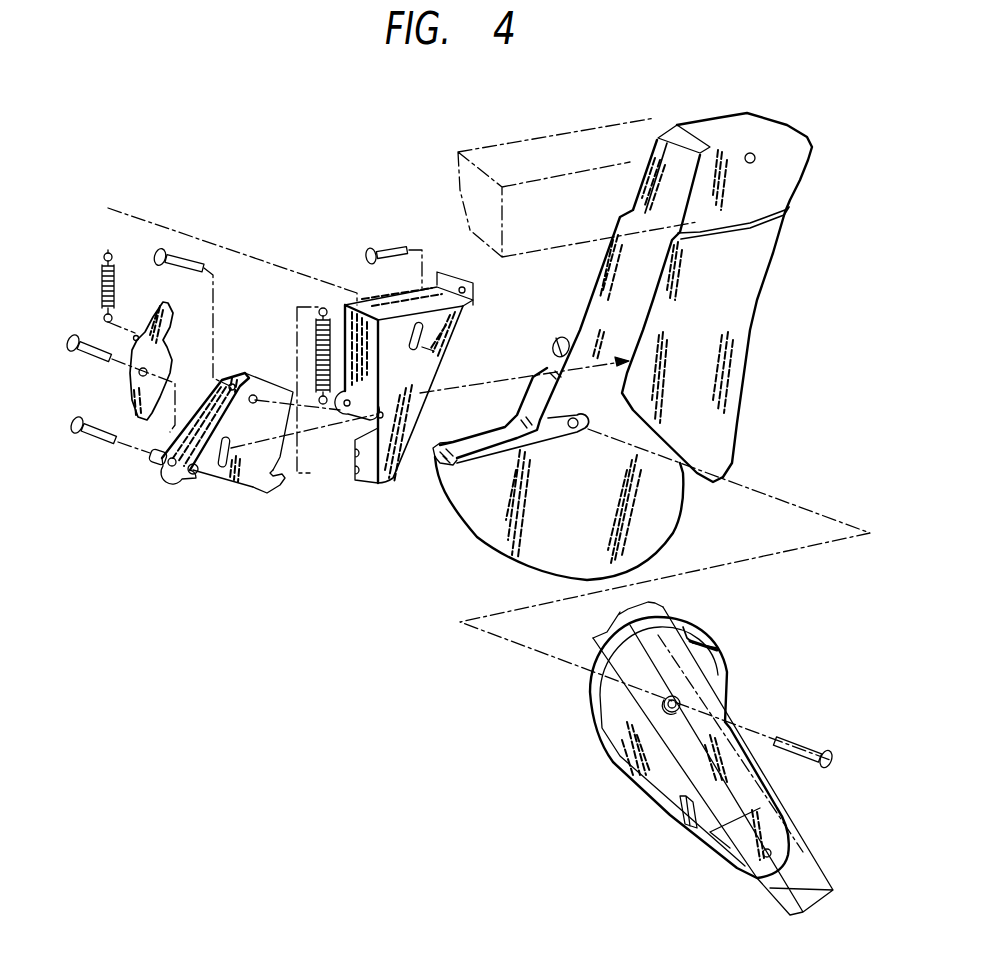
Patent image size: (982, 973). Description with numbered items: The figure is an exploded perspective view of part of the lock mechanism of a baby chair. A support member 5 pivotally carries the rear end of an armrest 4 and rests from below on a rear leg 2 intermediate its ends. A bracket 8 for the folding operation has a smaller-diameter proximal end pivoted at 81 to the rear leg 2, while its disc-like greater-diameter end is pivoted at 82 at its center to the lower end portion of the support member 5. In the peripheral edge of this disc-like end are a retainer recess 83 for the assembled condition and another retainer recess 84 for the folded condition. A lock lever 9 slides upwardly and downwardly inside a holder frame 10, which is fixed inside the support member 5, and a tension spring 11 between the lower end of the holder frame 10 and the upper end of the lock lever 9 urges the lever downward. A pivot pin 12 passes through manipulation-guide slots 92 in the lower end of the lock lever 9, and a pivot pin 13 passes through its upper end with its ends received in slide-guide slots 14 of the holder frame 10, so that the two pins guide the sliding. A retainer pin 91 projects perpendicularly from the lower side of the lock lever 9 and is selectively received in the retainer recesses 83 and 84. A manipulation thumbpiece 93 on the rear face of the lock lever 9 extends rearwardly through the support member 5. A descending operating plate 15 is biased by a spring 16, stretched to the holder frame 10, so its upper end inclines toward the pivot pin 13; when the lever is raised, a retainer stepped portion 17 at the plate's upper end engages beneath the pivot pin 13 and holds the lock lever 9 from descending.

The rear leg 2 is at (780, 884).
The armrest 4 is at (553, 140).
The support member 5 is at (750, 258).
The bracket 8 is at (603, 710).
The lock lever 9 is at (252, 489).
The holder frame 10 is at (416, 391).
The tension spring 11 is at (297, 336).
The pivot pin 12 is at (84, 360).
The pivot pin 13 is at (180, 252).
The slide-guide slot 14 is at (423, 332).
The descending operating plate 15 is at (130, 398).
The spring 16 is at (100, 283).
The retainer stepped portion 17 is at (166, 311).
The pivot 81 is at (773, 853).
The pivot 82 is at (682, 704).
The retainer recess 83 is at (696, 637).
The retainer recess 84 is at (683, 818).
The retainer pin 91 is at (150, 462).
The manipulation-guide slot 92 is at (218, 470).
The manipulation thumbpiece 93 is at (280, 482).